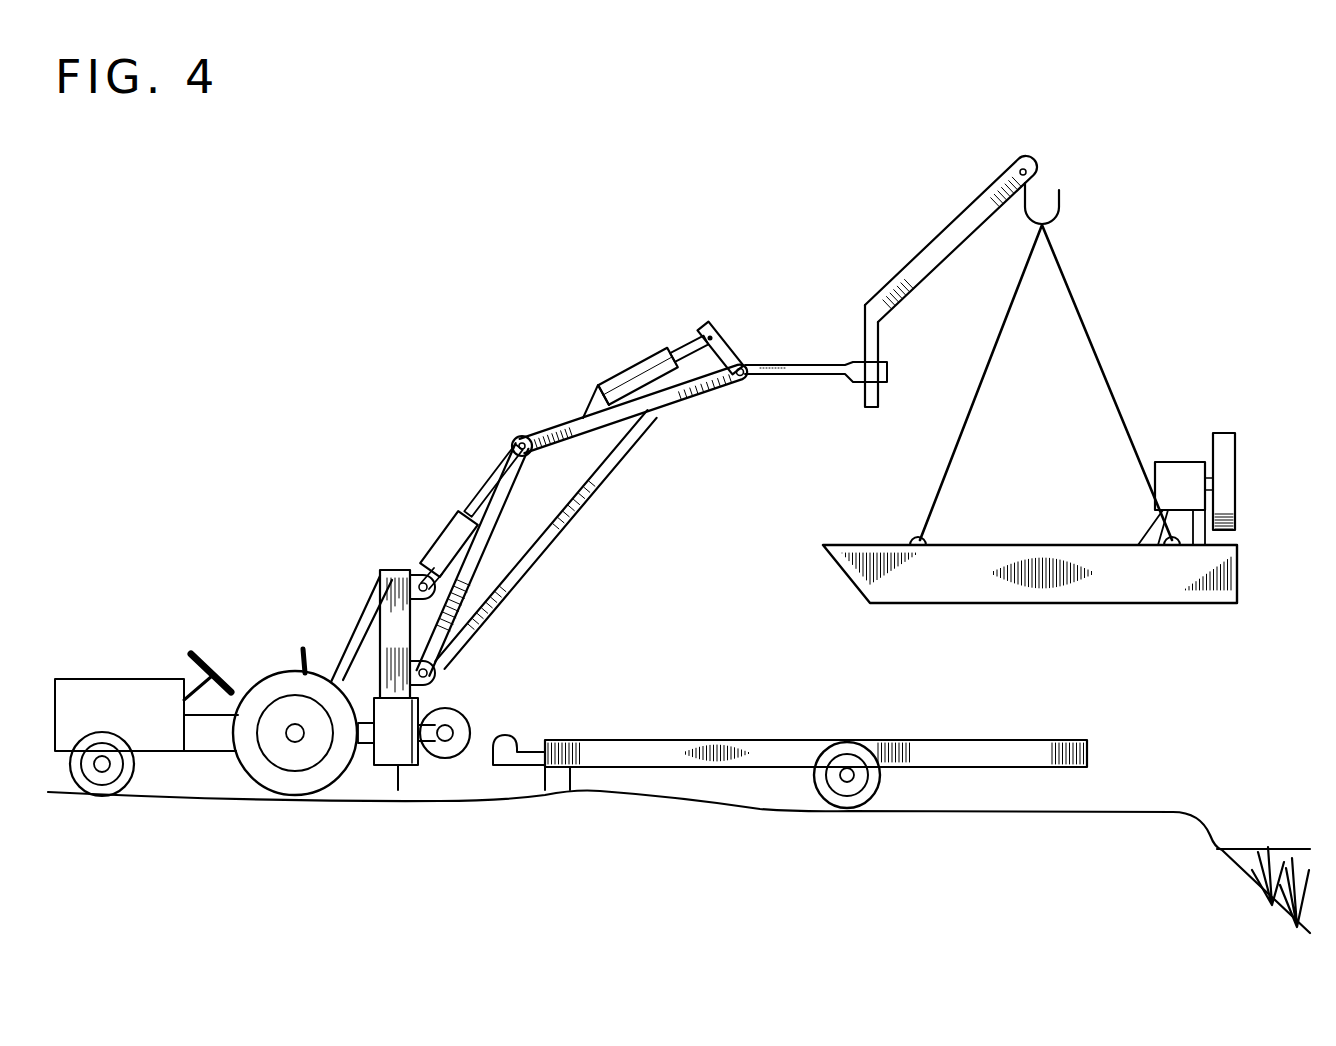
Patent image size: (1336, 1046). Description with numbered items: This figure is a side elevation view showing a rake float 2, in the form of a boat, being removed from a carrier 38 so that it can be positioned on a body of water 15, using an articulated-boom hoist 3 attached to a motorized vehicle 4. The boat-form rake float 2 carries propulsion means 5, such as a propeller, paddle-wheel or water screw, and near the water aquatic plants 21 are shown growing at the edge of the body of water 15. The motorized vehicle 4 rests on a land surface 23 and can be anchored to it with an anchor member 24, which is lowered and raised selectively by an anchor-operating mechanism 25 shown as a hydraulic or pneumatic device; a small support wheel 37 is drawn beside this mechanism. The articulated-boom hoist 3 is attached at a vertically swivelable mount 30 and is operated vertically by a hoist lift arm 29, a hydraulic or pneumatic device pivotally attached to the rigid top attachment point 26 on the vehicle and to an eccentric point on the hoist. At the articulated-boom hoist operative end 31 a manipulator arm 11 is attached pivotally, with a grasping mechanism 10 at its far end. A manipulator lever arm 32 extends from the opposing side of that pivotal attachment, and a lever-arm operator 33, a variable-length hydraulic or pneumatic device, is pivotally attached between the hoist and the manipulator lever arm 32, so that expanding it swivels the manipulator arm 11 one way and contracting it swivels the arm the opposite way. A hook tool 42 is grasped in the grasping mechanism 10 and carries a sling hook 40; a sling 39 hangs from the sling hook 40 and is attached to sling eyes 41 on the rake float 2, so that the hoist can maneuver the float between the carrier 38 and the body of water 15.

The rake float 2 is at (1043, 545).
The articulated-boom hoist 3 is at (517, 390).
The motorized vehicle 4 is at (120, 679).
The propulsion means 5 is at (1215, 433).
The grasping mechanism 10 is at (866, 372).
The manipulator arm 11 is at (800, 374).
The body of water 15 is at (1243, 857).
The aquatic plants 21 is at (1258, 888).
The land surface 23 is at (225, 799).
The anchor member 24 is at (392, 790).
The anchor-operating mechanism 25 is at (392, 757).
The top attachment point 26 is at (380, 570).
The hoist lift arm 29 is at (440, 533).
The vertically swivelable mount 30 is at (437, 667).
The articulated-boom hoist operative end 31 is at (740, 385).
The manipulator lever arm 32 is at (727, 340).
The lever-arm operator 33 is at (632, 378).
The support wheel 37 is at (455, 766).
The carrier 38 is at (763, 739).
The sling 39 is at (1007, 312).
The sling hook 40 is at (1060, 200).
The sling eyes 41 is at (910, 541).
The hook tool 42 is at (945, 240).